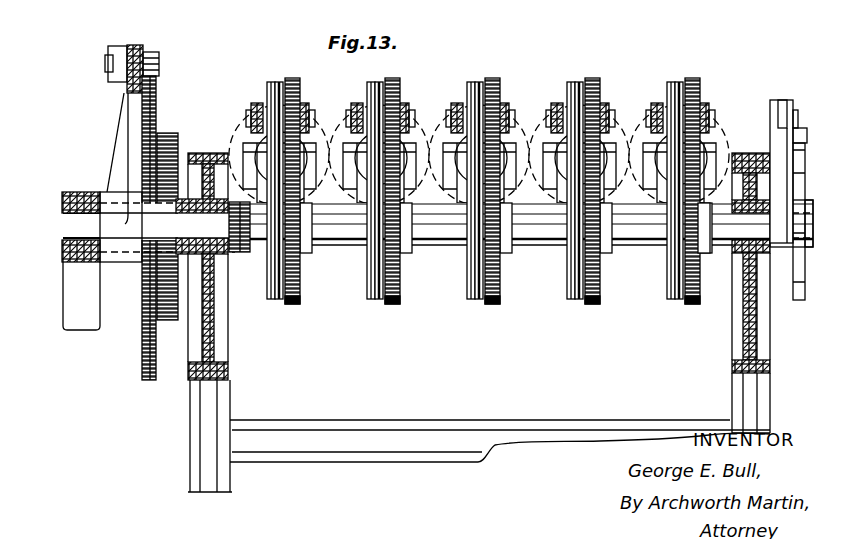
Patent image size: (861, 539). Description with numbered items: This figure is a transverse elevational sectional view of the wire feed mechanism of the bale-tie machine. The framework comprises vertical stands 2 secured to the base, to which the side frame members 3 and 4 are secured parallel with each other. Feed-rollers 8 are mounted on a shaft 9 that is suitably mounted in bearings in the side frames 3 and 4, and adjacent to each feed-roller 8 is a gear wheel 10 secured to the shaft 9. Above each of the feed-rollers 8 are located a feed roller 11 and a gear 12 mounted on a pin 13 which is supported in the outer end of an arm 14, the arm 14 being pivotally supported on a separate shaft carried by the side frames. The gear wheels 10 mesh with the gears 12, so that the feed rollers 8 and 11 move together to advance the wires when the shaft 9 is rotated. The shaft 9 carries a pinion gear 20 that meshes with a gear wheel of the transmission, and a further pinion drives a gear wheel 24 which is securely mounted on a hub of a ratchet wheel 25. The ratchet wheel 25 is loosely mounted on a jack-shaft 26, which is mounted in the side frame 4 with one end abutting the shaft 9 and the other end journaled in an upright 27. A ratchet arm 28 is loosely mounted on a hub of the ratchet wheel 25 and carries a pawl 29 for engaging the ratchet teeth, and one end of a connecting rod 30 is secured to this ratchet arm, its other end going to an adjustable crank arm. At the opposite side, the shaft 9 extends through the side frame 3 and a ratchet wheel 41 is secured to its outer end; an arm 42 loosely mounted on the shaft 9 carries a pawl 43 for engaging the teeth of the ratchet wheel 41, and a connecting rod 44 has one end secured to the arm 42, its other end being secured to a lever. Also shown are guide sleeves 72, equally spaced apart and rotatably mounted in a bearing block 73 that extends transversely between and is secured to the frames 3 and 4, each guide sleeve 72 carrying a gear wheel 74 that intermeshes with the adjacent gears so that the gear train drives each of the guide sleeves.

The vertical stand 2 is at (337, 421).
The side frame member 3 is at (732, 346).
The side frame member 4 is at (213, 347).
The feed-roller 8 is at (492, 284).
The shaft 9 is at (527, 230).
The gear wheel 10 is at (300, 296).
The feed roller 11 is at (470, 95).
The gear 12 is at (398, 79).
The pin 13 is at (447, 122).
The arm 14 is at (548, 105).
The pinion gear 20 is at (242, 254).
The gear wheel 24 is at (175, 140).
The ratchet wheel 25 is at (157, 111).
The jack-shaft 26 is at (86, 191).
The upright 27 is at (80, 320).
The ratchet arm 28 is at (116, 141).
The pawl 29 is at (157, 52).
The connecting rod 30 is at (120, 46).
The ratchet wheel 41 is at (802, 184).
The arm 42 is at (799, 116).
The pawl 43 is at (806, 134).
The connecting rod 44 is at (782, 100).
The guide sleeve 72 is at (324, 121).
The bearing block 73 is at (427, 200).
The gear wheel 74 is at (246, 148).